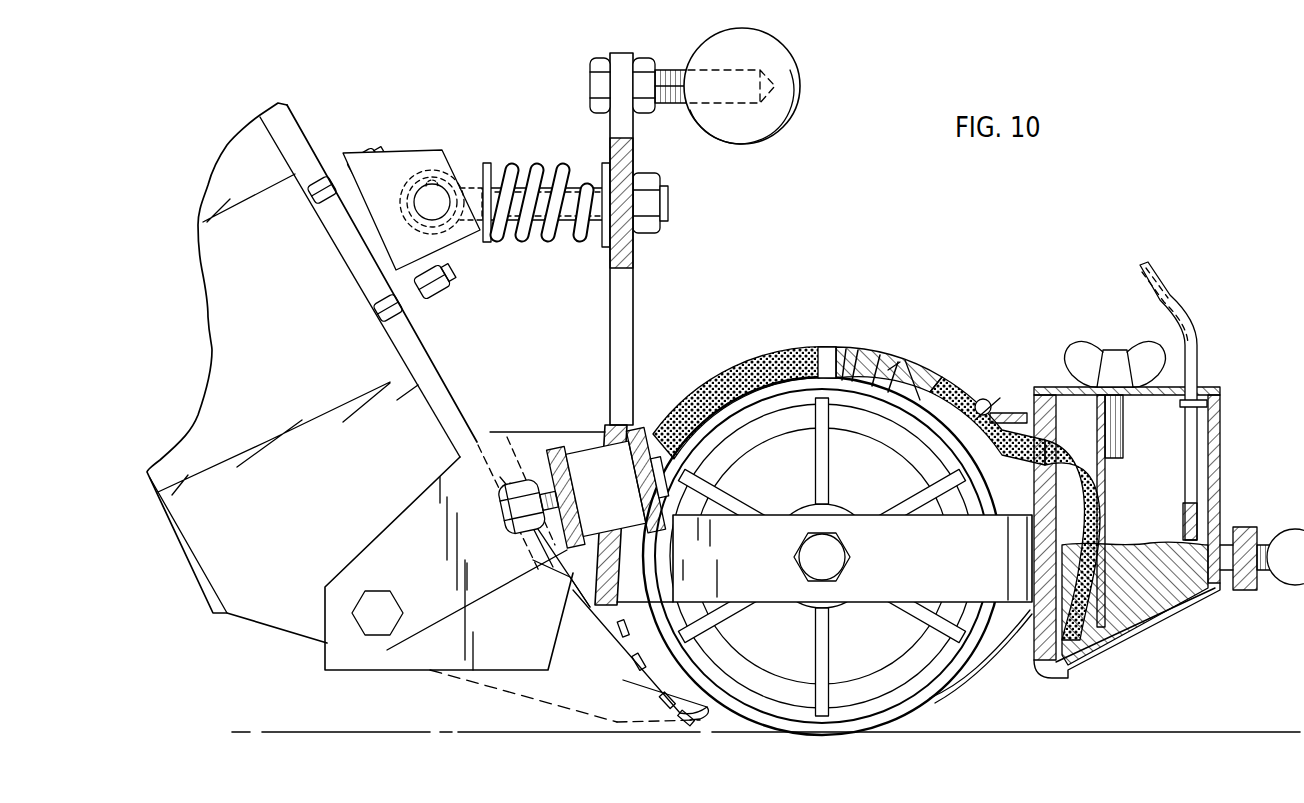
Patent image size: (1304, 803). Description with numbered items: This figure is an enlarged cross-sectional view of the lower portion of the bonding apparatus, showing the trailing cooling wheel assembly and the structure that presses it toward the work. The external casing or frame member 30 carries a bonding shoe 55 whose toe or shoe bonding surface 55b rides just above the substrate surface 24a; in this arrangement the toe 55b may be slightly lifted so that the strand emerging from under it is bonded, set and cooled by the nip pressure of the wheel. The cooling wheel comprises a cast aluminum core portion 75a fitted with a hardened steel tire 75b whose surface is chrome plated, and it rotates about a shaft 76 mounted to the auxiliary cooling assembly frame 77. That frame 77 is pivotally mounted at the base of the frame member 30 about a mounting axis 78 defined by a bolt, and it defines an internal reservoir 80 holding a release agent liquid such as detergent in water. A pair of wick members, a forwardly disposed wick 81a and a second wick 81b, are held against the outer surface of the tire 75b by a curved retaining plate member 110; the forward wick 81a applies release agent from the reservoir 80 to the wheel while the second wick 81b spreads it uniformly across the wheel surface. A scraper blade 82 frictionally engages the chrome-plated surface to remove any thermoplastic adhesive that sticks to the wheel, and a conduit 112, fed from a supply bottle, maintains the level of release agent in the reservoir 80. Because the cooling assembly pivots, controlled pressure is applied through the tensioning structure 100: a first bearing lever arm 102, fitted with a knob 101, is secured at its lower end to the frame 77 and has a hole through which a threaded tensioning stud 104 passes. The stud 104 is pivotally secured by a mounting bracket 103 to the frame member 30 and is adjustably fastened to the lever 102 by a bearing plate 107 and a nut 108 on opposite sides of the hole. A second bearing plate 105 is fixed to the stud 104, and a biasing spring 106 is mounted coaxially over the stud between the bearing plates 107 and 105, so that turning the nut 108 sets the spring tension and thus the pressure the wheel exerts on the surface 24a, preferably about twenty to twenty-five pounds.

The substrate surface 24a is at (298, 732).
The frame member 30 is at (270, 600).
The bonding shoe 55 is at (512, 687).
The shoe bonding surface 55b is at (632, 722).
The cast aluminum core portion 75a is at (772, 702).
The hardened steel tire 75b is at (922, 698).
The shaft 76 is at (835, 553).
The auxiliary cooling assembly frame 77 is at (779, 575).
The mounting axis 78 is at (378, 600).
The reservoir 80 is at (1218, 478).
The forwardly disposed wick 81a is at (952, 417).
The second wick 81b is at (807, 372).
The scraper blade 82 is at (1000, 647).
The tensioning structure 100 is at (545, 120).
The knob 101 is at (785, 60).
The first bearing lever arm 102 is at (634, 136).
The mounting bracket 103 is at (390, 192).
The tensioning stud 104 is at (478, 185).
The second bearing plate 105 is at (485, 246).
The biasing spring 106 is at (547, 228).
The bearing plate 107 is at (602, 247).
The nut 108 is at (657, 184).
The curved retaining plate member 110 is at (857, 353).
The conduit 112 is at (1157, 280).